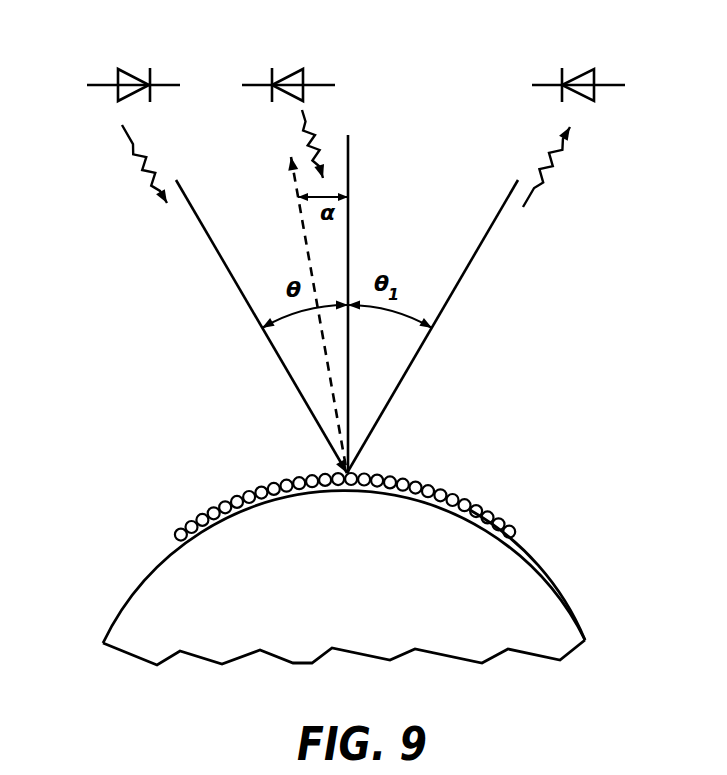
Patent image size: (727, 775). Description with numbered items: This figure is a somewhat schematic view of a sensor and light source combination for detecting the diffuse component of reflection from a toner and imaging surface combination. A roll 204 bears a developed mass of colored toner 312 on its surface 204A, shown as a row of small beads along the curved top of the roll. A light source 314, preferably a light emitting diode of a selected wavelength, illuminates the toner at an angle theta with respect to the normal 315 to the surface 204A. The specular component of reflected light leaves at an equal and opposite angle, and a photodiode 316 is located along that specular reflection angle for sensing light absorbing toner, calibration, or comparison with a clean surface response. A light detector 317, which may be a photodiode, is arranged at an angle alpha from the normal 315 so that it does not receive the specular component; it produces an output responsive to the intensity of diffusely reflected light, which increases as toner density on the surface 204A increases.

The light source 314 is at (118, 63).
The light detector 317 is at (303, 65).
The photodiode 316 is at (594, 65).
The normal 315 is at (350, 216).
The colored toner 312 is at (452, 498).
The roll 204 is at (150, 552).
The surface 204A is at (543, 567).